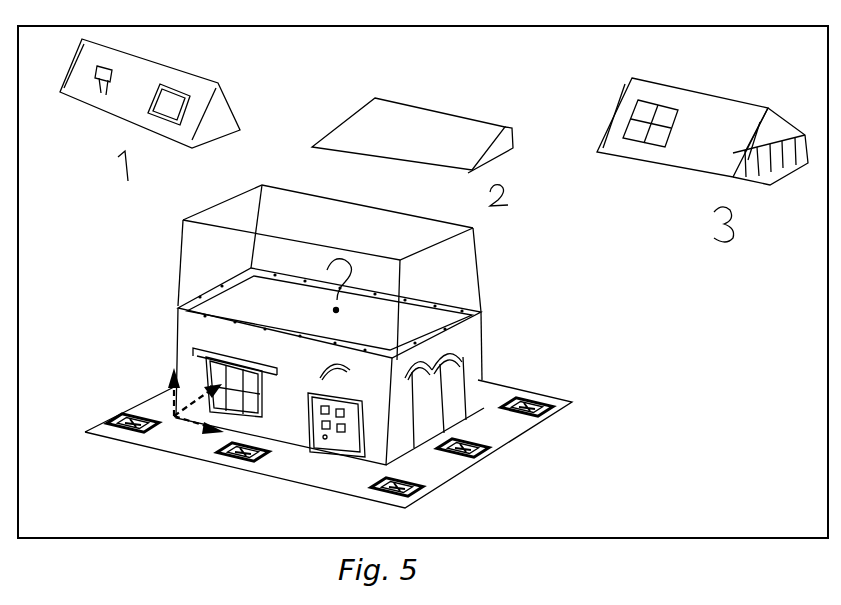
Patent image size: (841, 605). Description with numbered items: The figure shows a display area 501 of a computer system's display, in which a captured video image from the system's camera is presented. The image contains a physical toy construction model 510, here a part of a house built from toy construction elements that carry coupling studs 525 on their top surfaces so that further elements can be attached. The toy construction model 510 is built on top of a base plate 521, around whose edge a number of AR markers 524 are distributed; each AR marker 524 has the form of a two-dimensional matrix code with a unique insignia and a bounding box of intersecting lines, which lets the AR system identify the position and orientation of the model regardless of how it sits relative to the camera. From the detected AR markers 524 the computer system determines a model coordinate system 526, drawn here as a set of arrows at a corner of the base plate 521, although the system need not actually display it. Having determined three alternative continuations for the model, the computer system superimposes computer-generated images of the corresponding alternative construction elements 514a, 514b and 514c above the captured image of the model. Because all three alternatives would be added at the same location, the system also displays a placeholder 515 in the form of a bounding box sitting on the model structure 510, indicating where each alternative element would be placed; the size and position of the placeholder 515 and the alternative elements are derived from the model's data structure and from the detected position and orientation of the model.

The display area 501 is at (713, 447).
The toy construction model 510 is at (380, 362).
The alternative construction element 514a is at (133, 110).
The alternative construction element 514b is at (412, 140).
The alternative construction element 514c is at (688, 160).
The placeholder 515 is at (282, 272).
The base plate 521 is at (317, 444).
The AR markers 524 is at (331, 442).
The coupling studs 525 is at (423, 300).
The coordinate system 526 is at (153, 400).